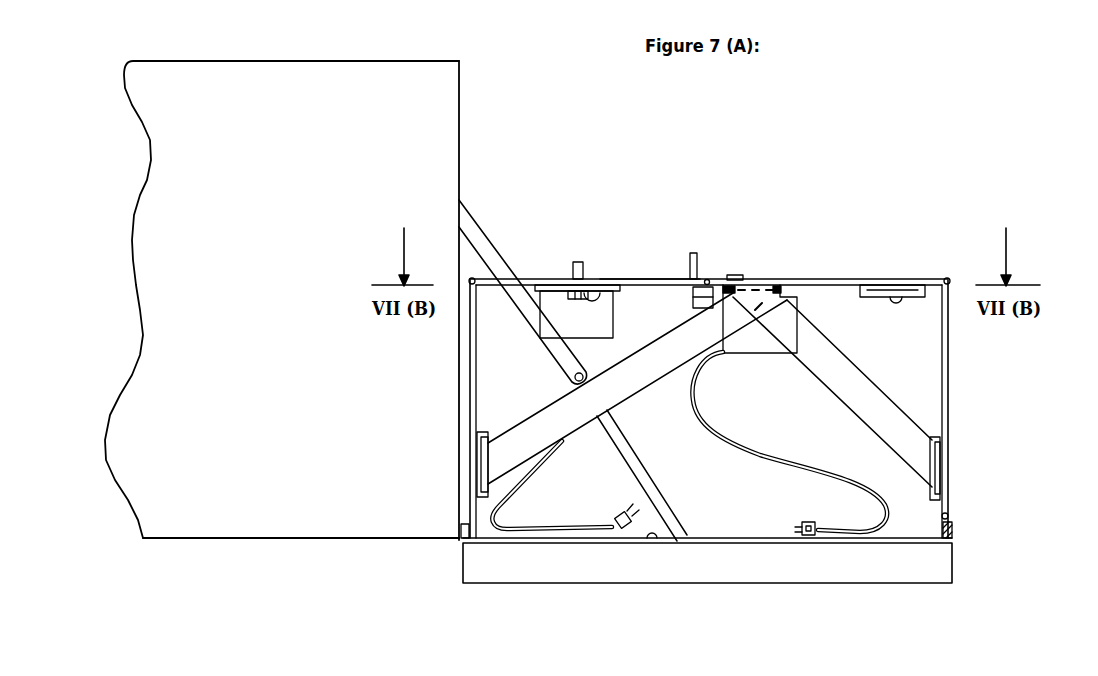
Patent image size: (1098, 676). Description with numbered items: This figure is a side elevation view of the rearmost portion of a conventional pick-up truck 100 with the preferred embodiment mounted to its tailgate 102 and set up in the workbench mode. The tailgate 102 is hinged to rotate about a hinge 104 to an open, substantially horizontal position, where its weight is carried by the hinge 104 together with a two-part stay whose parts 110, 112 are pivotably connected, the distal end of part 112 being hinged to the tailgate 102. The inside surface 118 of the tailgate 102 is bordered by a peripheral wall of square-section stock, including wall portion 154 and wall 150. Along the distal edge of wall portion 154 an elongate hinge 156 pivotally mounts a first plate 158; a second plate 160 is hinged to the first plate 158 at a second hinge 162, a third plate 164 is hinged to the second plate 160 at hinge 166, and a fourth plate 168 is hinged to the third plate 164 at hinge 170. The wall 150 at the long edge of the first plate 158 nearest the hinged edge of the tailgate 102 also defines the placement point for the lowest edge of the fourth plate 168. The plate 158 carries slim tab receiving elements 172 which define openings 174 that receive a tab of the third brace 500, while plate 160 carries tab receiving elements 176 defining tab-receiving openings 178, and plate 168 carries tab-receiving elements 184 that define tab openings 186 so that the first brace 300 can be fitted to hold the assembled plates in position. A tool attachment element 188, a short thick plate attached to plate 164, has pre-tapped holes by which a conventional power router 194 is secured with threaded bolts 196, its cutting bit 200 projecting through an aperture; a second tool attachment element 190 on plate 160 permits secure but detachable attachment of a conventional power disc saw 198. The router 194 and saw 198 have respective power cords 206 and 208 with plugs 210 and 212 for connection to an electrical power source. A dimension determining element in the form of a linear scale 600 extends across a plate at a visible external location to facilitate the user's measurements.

The pick-up truck 100 is at (480, 109).
The tailgate 102 is at (972, 556).
The hinge 104 is at (447, 538).
The stay part 110 is at (493, 260).
The stay part 112 is at (683, 540).
The inside surface 118 is at (653, 538).
The wall 150 is at (463, 527).
The wall portion 154 is at (953, 528).
The elongate hinge 156 is at (947, 516).
The first plate 158 is at (949, 463).
The second plate 160 is at (838, 279).
The second hinge 162 is at (946, 280).
The third plate 164 is at (636, 279).
The hinge 166 is at (708, 280).
The fourth plate 168 is at (468, 362).
The hinge 170 is at (472, 280).
The tab receiving element 172 is at (940, 437).
The opening 174 is at (940, 462).
The tab receiving element 176 is at (901, 299).
The tab-receiving opening 178 is at (884, 290).
The tab-receiving element 184 is at (480, 434).
The tab opening 186 is at (480, 463).
The tool attachment element 188 is at (551, 287).
The tool attachment element 190 is at (779, 290).
The power router 194 is at (568, 322).
The threaded bolt 196 is at (600, 293).
The power disc saw 198 is at (760, 337).
The cutting bit 200 is at (580, 262).
The power cord 206 is at (580, 529).
The power cord 208 is at (798, 467).
The plug 210 is at (621, 531).
The plug 212 is at (810, 536).
The first brace 300 is at (578, 402).
The third brace 500 is at (838, 362).
The linear scale 600 is at (736, 275).